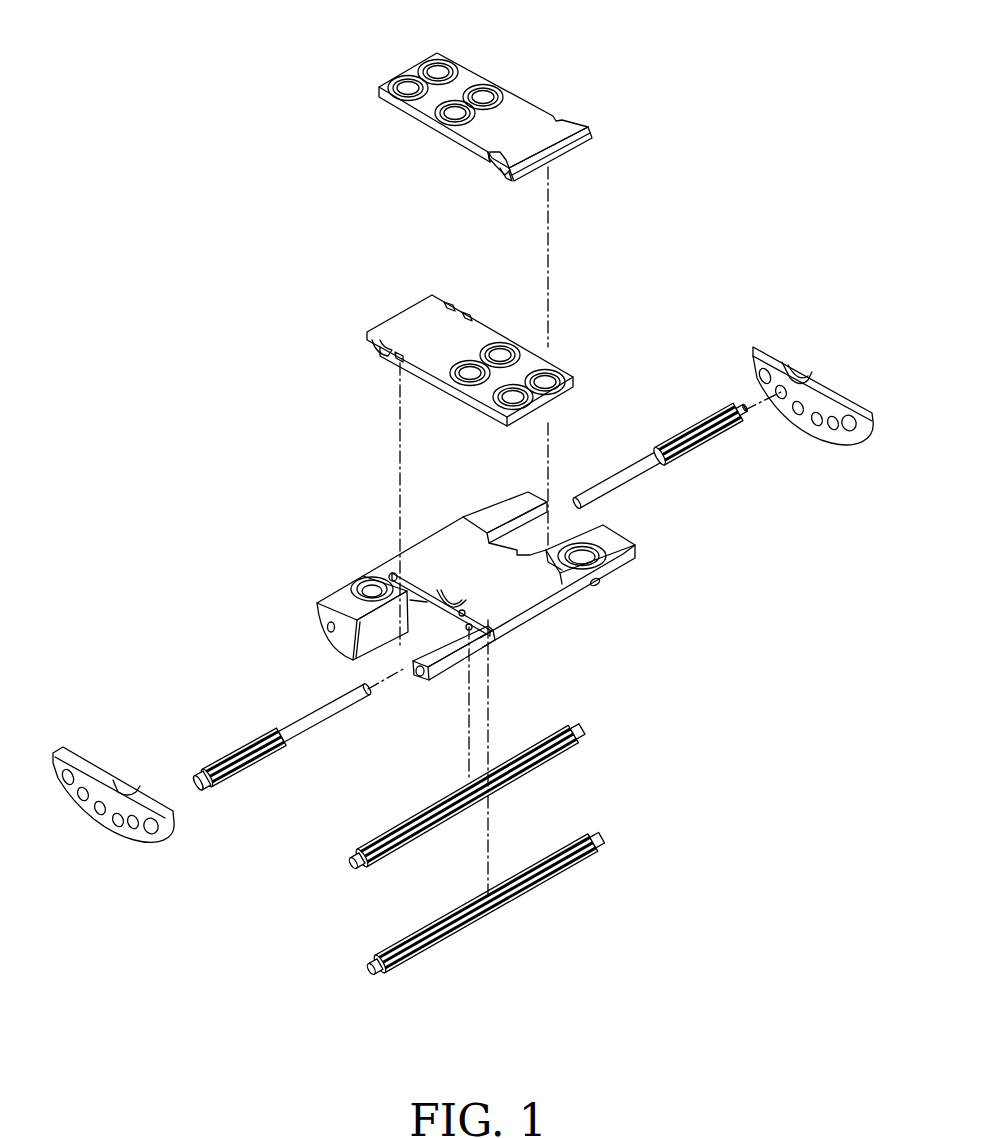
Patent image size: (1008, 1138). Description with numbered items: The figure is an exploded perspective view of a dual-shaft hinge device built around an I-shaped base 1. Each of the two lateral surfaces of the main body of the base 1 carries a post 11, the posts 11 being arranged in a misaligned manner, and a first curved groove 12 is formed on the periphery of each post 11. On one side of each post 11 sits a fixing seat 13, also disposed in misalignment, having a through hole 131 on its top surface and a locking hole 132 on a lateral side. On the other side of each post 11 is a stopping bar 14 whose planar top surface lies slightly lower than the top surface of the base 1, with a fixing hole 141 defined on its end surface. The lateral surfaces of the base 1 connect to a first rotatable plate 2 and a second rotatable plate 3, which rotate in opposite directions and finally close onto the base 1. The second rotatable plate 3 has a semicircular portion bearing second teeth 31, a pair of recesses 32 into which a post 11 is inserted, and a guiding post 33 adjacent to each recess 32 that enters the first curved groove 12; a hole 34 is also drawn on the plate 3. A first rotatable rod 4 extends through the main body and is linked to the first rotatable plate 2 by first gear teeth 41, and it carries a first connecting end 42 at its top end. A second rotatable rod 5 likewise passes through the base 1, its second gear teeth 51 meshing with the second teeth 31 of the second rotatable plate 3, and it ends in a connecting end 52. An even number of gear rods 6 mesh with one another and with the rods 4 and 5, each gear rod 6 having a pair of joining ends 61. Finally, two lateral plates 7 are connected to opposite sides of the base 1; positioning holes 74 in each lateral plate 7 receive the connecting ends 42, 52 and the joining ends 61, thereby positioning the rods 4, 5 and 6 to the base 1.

The base 1 is at (605, 597).
The post 11 is at (452, 592).
The first curved groove 12 is at (468, 628).
The fixing seat 13 is at (343, 600).
The through hole 131 is at (372, 588).
The locking hole 132 is at (325, 627).
The stopping bar 14 is at (508, 510).
The fixing hole 141 is at (410, 670).
The first rotatable plate 2 is at (574, 359).
The second rotatable plate 3 is at (528, 89).
The second teeth 31 is at (563, 150).
The recess 32 is at (493, 163).
The guiding post 33 is at (503, 173).
The through hole 34 is at (438, 72).
The first rotatable rod 4 is at (266, 743).
The first gear teeth 41 is at (225, 747).
The first connecting end 42 is at (203, 787).
The second rotatable rod 5 is at (663, 427).
The second gear teeth 51 is at (700, 430).
The connecting end 52 is at (737, 413).
The gear rod 6 is at (490, 862).
The joining end 61 is at (582, 728).
The lateral plate 7 is at (792, 349).
The positioning hole 74 is at (780, 397).